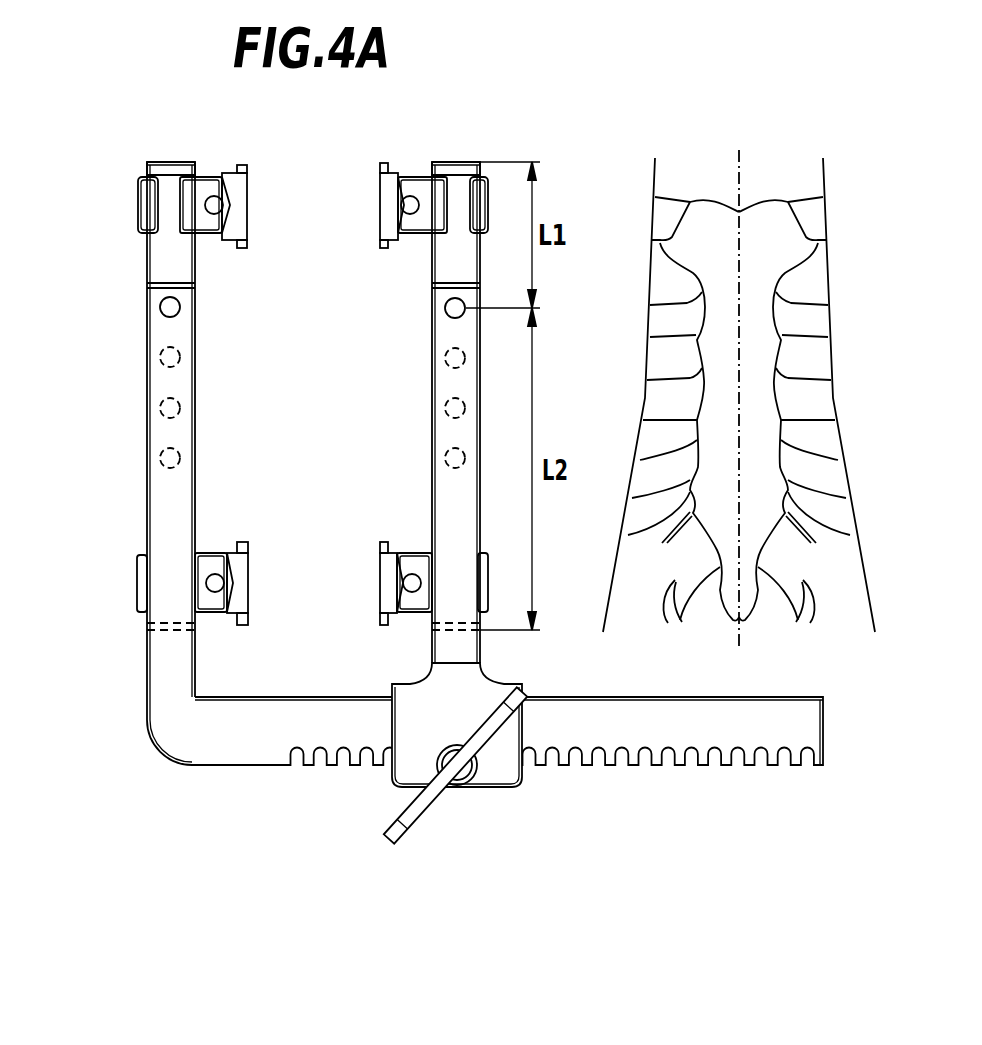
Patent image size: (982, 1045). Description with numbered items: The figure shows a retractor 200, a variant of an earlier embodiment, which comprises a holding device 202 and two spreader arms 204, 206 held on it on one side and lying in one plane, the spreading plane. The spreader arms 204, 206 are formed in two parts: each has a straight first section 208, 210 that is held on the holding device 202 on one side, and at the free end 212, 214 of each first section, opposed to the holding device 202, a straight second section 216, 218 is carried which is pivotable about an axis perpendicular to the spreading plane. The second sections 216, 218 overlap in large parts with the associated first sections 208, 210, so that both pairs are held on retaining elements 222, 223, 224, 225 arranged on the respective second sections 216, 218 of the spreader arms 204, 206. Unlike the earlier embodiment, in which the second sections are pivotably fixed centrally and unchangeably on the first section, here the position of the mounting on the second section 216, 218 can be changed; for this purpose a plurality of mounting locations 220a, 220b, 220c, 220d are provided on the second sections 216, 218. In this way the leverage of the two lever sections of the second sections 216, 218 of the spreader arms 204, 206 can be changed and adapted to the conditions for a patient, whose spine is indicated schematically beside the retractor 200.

The retractor 200 is at (547, 137).
The holding device 202 is at (338, 778).
The spreader arm 204 is at (498, 388).
The spreader arm 206 is at (138, 425).
The first section 208 is at (460, 513).
The first section 210 is at (175, 512).
The free end 212 is at (440, 297).
The free end 214 is at (180, 291).
The second section 216 is at (470, 150).
The second section 218 is at (148, 150).
The mounting location 220a is at (170, 458).
The mounting location 220b is at (170, 408).
The mounting location 220c is at (172, 355).
The mounting location 220d is at (173, 305).
The retaining element 222 is at (380, 185).
The retaining element 223 is at (380, 600).
The retaining element 224 is at (248, 222).
The retaining element 225 is at (250, 573).